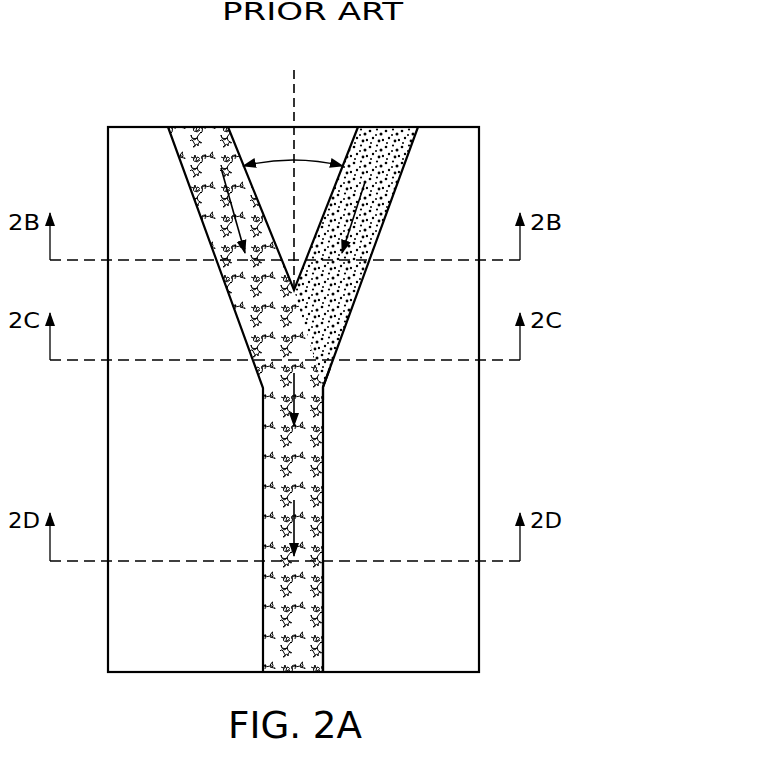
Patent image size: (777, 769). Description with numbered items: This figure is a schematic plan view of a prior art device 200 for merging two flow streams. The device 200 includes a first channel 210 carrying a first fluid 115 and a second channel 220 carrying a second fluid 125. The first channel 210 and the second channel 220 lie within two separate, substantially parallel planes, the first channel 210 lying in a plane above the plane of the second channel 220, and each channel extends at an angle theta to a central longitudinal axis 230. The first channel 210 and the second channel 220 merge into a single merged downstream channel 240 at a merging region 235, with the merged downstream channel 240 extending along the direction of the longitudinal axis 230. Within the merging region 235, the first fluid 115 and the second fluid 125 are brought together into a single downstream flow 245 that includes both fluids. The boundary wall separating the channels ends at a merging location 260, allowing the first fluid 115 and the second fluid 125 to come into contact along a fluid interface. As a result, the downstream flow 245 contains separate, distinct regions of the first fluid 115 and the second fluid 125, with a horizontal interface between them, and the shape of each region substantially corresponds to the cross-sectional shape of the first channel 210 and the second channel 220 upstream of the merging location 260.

The device 200 is at (509, 69).
The first fluid 115 is at (188, 140).
The second fluid 125 is at (393, 137).
The first channel 210 is at (184, 171).
The second channel 220 is at (405, 161).
The central longitudinal axis 230 is at (294, 79).
The merging region 235 is at (323, 387).
The merged downstream channel 240 is at (323, 608).
The downstream flow 245 is at (300, 608).
The merging location 260 is at (290, 440).